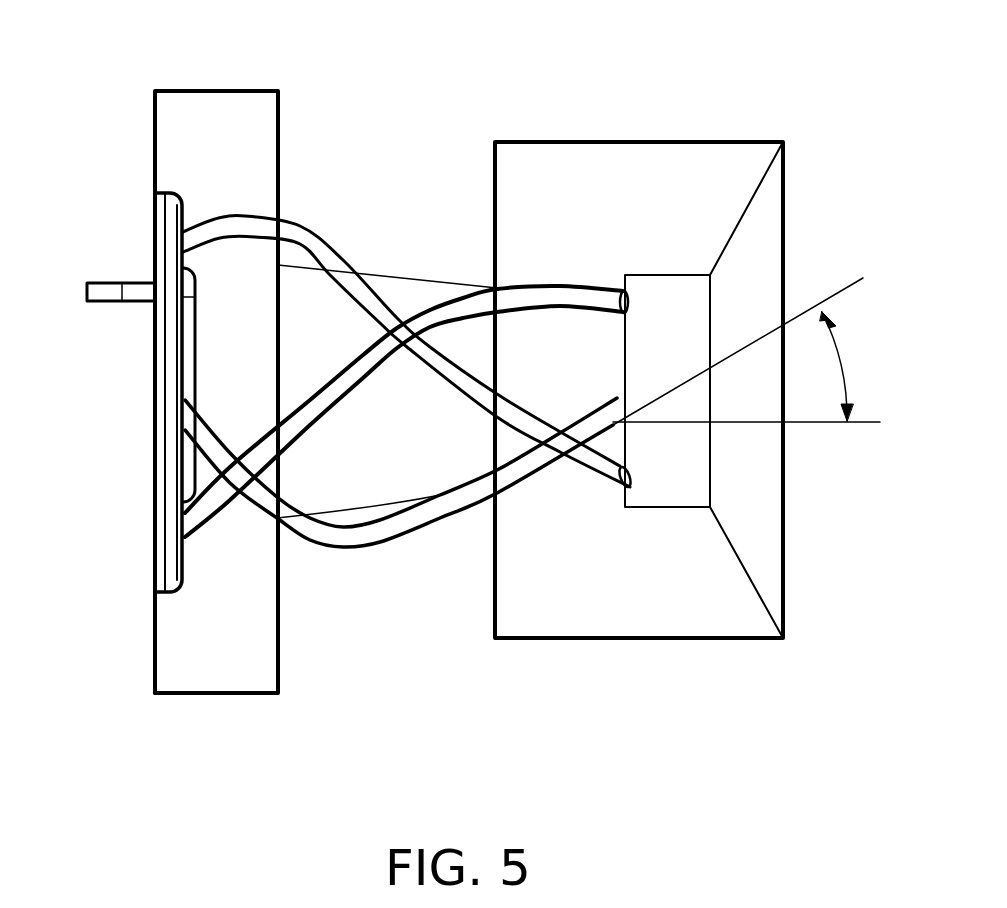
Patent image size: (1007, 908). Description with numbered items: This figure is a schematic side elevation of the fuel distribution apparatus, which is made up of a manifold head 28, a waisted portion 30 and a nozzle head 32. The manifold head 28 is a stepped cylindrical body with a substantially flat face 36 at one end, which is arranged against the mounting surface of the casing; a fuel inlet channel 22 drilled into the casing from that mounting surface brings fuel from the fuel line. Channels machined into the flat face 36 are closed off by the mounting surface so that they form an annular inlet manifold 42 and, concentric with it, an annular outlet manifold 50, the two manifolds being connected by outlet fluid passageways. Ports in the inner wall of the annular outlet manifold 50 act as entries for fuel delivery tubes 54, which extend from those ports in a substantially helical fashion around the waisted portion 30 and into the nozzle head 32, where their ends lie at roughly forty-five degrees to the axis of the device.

The fuel inlet channel 22 is at (102, 302).
The manifold head 28 is at (228, 91).
The waisted portion 30 is at (413, 278).
The nozzle head 32 is at (675, 141).
The flat face 36 is at (156, 648).
The annular inlet manifold 42 is at (183, 502).
The annular outlet manifold 50 is at (183, 207).
The fuel delivery tubes 54 is at (551, 287).